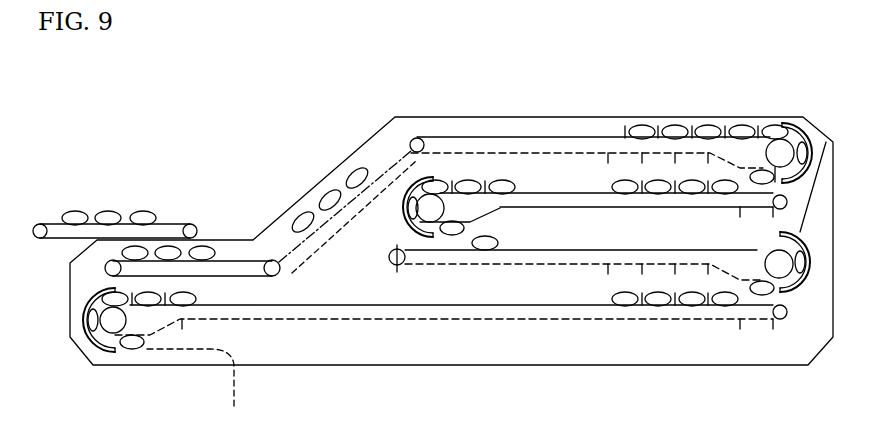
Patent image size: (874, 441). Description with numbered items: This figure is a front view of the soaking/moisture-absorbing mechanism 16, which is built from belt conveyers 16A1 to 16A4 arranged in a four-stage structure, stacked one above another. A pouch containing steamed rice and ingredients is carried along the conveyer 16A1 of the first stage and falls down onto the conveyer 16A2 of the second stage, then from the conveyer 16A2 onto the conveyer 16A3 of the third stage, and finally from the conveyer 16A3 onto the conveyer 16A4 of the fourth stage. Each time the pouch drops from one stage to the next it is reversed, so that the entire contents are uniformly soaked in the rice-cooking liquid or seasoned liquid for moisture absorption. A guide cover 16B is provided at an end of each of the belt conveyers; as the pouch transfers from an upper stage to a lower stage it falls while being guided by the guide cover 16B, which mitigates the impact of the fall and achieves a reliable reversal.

The soaking/moisture-absorbing mechanism 16 is at (191, 134).
The conveyer of a first stage 16A1 is at (500, 137).
The conveyer of a second stage 16A2 is at (538, 192).
The conveyer of a third stage 16A3 is at (408, 250).
The conveyer of a fourth stage 16A4 is at (312, 305).
The guide cover 16B is at (88, 310).